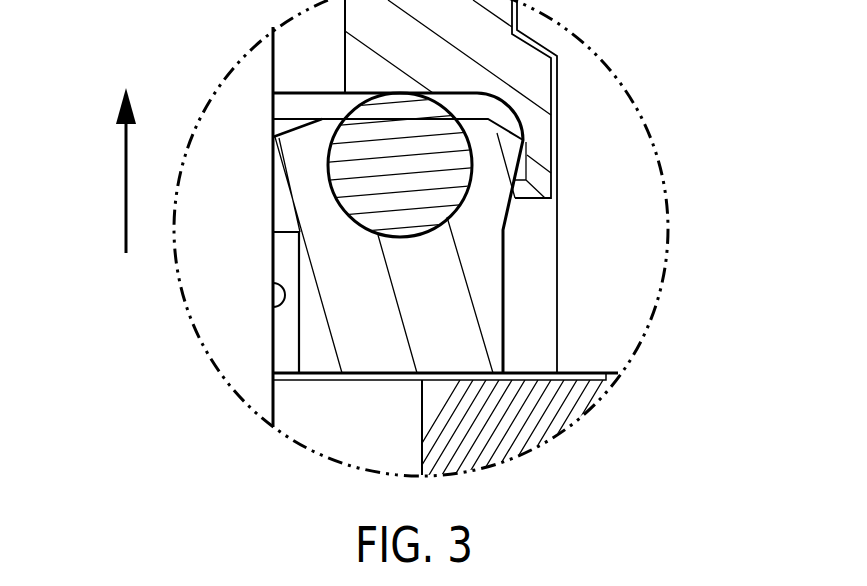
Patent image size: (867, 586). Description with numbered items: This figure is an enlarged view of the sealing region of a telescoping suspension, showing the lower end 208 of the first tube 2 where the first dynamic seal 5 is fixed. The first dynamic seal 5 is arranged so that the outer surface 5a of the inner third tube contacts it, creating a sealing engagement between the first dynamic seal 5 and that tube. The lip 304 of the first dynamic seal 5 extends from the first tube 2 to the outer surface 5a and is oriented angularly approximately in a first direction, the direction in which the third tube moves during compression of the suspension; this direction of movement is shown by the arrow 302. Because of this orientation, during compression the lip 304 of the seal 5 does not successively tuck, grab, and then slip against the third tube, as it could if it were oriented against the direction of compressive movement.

The first tube 2 is at (603, 118).
The first dynamic seal 5 is at (480, 268).
The outer surface 5a is at (273, 283).
The lower end 208 is at (194, 404).
The arrow 302 is at (121, 164).
The lip 304 is at (273, 137).